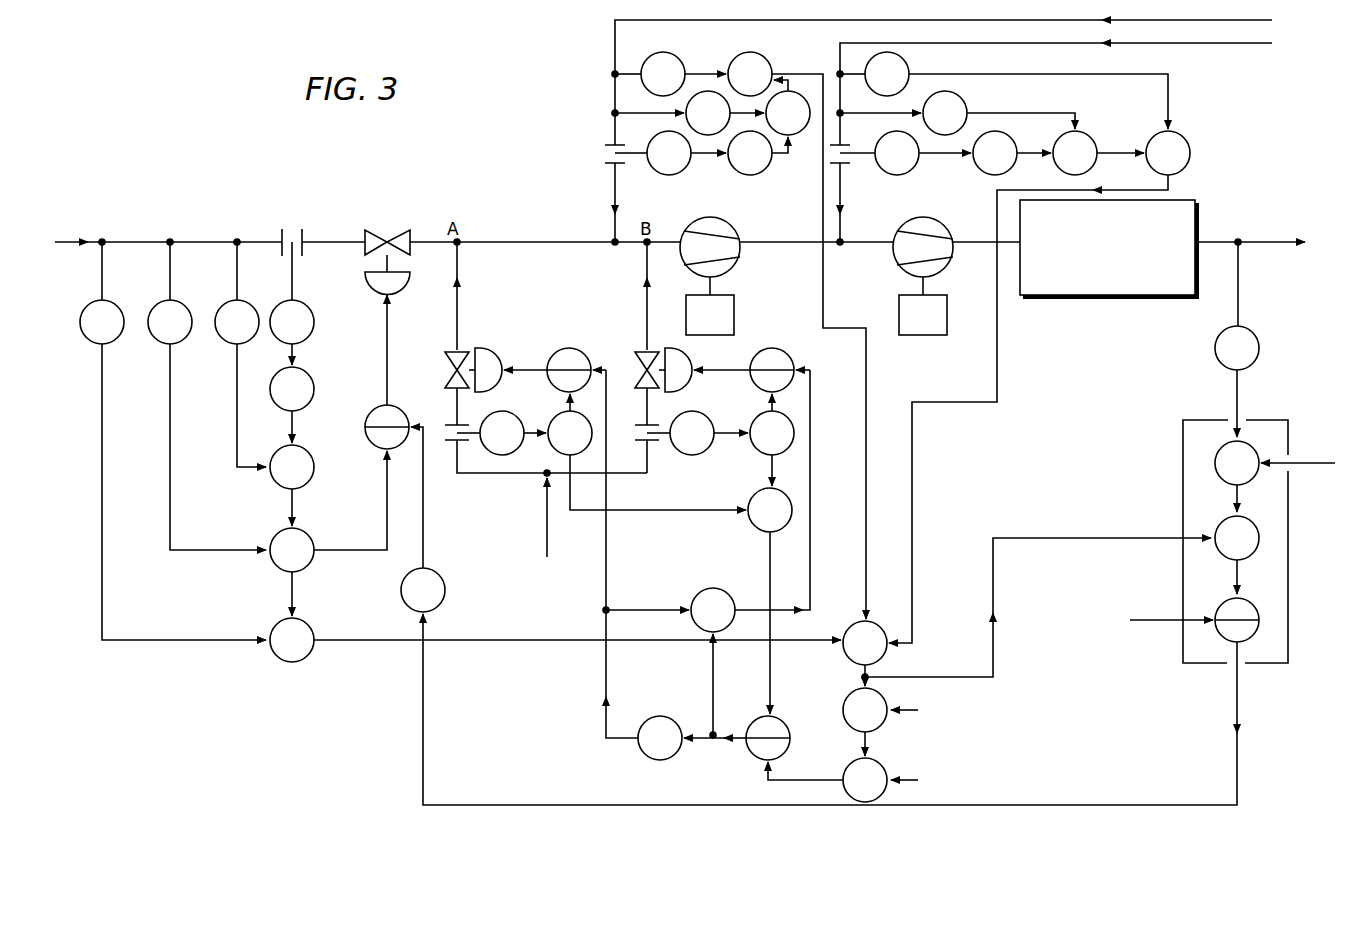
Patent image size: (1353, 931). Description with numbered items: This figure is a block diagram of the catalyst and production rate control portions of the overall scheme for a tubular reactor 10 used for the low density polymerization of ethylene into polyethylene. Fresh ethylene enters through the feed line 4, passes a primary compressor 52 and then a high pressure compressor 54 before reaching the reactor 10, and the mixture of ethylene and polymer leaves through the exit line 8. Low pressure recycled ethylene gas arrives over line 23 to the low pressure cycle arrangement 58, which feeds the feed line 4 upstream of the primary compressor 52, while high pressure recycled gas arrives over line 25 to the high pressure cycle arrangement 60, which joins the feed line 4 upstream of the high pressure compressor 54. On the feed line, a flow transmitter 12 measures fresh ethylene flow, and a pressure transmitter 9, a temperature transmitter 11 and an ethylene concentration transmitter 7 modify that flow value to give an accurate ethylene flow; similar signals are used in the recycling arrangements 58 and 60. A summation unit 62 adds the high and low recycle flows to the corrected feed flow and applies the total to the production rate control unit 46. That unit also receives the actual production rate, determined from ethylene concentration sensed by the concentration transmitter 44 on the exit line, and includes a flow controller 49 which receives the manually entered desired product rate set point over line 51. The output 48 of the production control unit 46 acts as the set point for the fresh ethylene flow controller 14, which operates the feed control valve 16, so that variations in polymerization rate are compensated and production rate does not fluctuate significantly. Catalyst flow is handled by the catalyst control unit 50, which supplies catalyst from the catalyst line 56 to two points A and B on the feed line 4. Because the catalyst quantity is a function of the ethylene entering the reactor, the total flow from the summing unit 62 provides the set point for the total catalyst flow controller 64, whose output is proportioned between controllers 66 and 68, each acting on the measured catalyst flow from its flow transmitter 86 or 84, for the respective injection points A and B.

The feed line 4 is at (207, 242).
The ethylene concentration transmitter 7 is at (124, 332).
The exit line 8 is at (1283, 244).
The pressure transmitter 9 is at (259, 332).
The tubular reactor 10 is at (1108, 298).
The temperature transmitter 11 is at (192, 332).
The flow transmitter 12 is at (314, 315).
The fresh ethylene flow controller 14 is at (365, 434).
The feed control valve 16 is at (383, 210).
The line 23 is at (1268, 20).
The line 25 is at (1250, 45).
The concentration transmitter 44 is at (1222, 363).
The production rate control unit 46 is at (1183, 443).
The output 48 is at (1230, 752).
The flow controller 49 is at (1252, 608).
The catalyst control unit 50 is at (728, 528).
The line 51 is at (1130, 620).
The primary compressor 52 is at (729, 222).
The high pressure compressor 54 is at (918, 219).
The catalyst supply line 56 is at (547, 560).
The low pressure cycle arrangement 58 is at (598, 100).
The high pressure cycle arrangement 60 is at (1182, 100).
The summation unit 62 is at (856, 625).
The total catalyst flow controller 64 is at (760, 757).
The controller 66 is at (567, 348).
The controller 68 is at (795, 335).
The catalyst flow transmitter 84 is at (735, 400).
The catalyst flow transmitter 86 is at (536, 400).